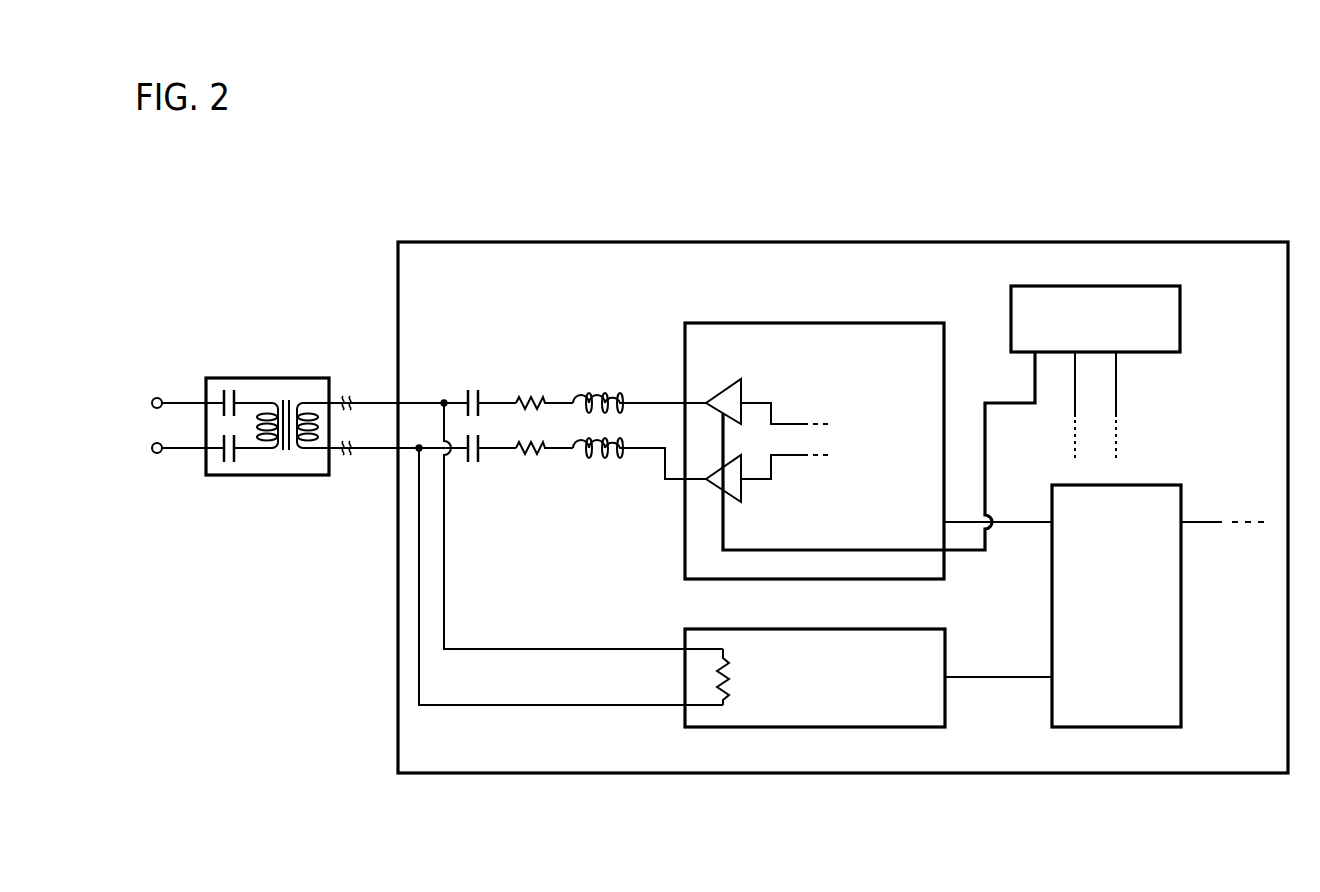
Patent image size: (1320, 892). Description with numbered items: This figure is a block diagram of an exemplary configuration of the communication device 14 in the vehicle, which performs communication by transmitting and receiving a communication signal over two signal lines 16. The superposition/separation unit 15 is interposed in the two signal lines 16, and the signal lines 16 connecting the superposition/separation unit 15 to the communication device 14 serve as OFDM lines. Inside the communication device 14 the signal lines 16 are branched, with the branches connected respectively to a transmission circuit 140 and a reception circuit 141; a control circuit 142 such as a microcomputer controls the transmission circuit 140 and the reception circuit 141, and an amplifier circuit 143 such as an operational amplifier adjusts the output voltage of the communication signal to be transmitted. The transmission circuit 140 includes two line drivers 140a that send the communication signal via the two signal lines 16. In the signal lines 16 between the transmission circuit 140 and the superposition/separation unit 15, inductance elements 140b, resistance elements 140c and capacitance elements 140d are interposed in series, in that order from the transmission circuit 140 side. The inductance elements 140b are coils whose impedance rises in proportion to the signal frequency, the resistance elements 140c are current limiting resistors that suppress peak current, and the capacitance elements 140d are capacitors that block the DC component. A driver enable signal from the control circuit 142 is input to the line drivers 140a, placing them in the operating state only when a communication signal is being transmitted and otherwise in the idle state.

The communication device 14 is at (943, 242).
The superposition/separation unit 15 is at (294, 378).
The signal lines 16 is at (372, 400).
The transmission circuit 140 is at (834, 323).
The line drivers 140a is at (722, 390).
The inductance elements 140b is at (595, 390).
The resistance elements 140c is at (533, 397).
The capacitance elements 140d is at (468, 388).
The reception circuit 141 is at (893, 629).
The control circuit 142 is at (1011, 313).
The amplifier circuit 143 is at (1152, 485).